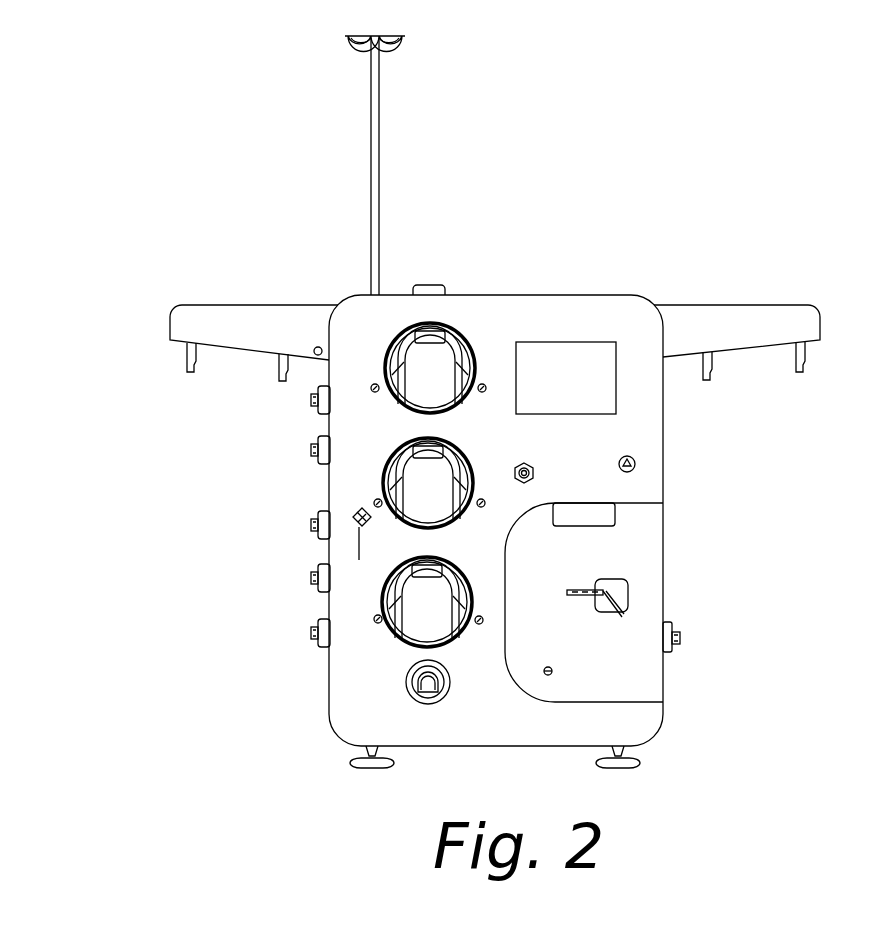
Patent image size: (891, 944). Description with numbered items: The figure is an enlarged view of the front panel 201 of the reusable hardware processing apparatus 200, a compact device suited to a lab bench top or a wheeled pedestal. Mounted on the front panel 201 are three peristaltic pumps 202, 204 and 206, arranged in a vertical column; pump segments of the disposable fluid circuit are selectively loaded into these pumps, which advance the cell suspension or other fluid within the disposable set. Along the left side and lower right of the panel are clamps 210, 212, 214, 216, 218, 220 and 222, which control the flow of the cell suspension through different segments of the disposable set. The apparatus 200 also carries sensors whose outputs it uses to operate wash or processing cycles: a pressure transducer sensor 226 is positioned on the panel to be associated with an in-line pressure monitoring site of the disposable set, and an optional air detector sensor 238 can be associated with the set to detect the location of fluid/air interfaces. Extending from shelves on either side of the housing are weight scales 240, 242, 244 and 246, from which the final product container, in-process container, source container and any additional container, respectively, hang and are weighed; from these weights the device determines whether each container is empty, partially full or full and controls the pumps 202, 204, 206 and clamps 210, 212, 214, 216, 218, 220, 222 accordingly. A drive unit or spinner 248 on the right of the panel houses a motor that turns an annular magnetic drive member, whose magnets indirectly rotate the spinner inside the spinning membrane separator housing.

The reusable hardware processing apparatus 200 is at (765, 565).
The front panel 201 is at (516, 728).
The peristaltic pump 202 is at (443, 360).
The peristaltic pump 204 is at (440, 477).
The peristaltic pump 206 is at (433, 595).
The clamp 210 is at (311, 402).
The clamp 212 is at (311, 452).
The clamp 214 is at (311, 527).
The clamp 216 is at (311, 580).
The clamp 218 is at (311, 635).
The clamp 220 is at (406, 683).
The clamp 222 is at (682, 638).
The pressure transducer sensor 226 is at (535, 473).
The air detector sensor 238 is at (360, 550).
The weight scale 240 is at (805, 375).
The weight scale 242 is at (712, 378).
The weight scale 244 is at (186, 371).
The weight scale 246 is at (276, 367).
The drive unit or spinner 248 is at (640, 517).